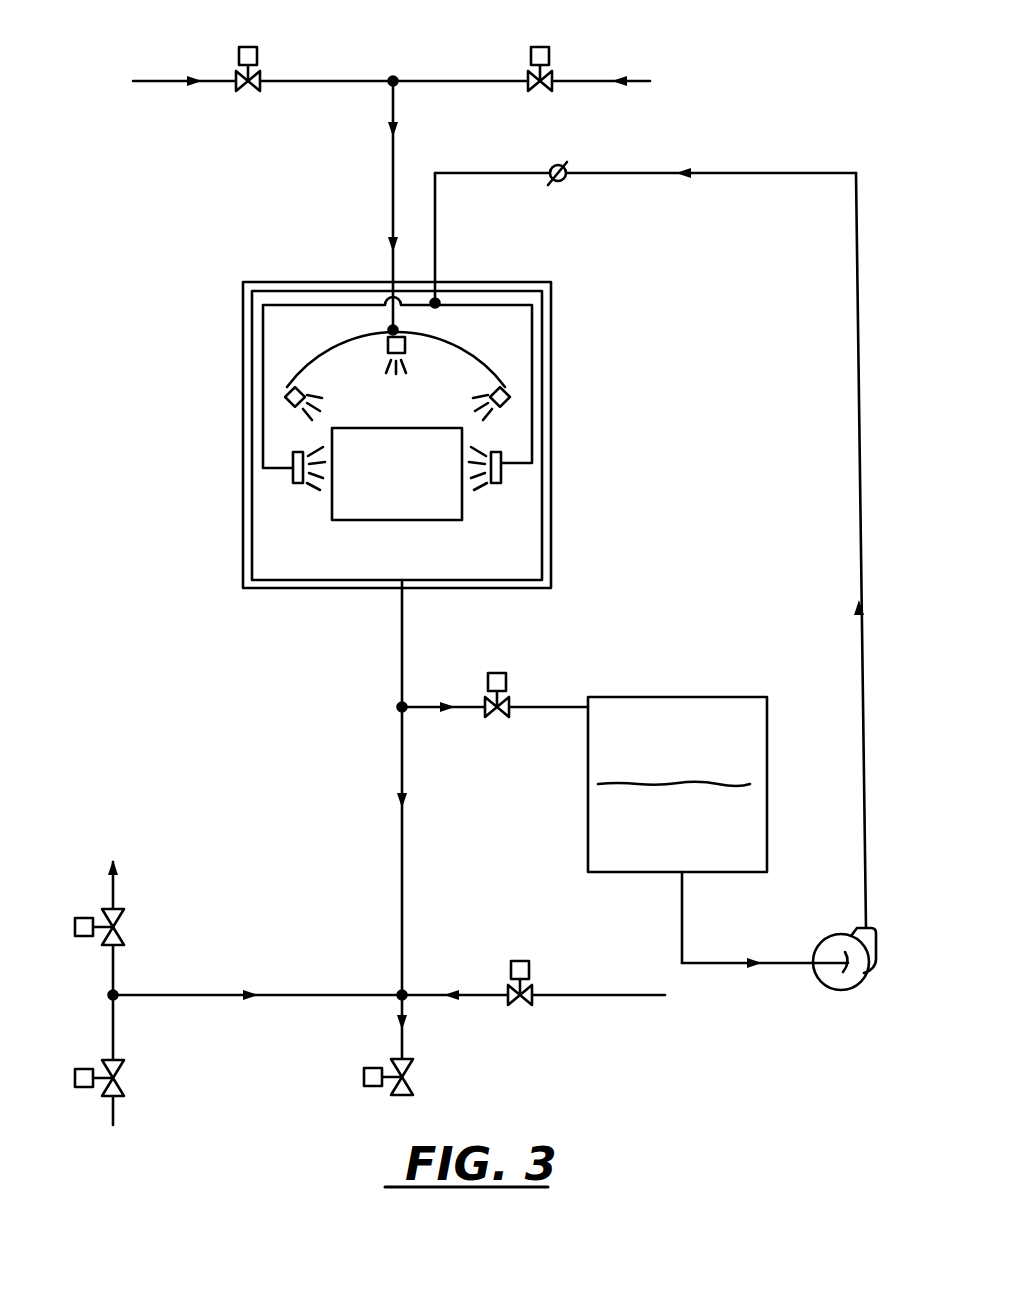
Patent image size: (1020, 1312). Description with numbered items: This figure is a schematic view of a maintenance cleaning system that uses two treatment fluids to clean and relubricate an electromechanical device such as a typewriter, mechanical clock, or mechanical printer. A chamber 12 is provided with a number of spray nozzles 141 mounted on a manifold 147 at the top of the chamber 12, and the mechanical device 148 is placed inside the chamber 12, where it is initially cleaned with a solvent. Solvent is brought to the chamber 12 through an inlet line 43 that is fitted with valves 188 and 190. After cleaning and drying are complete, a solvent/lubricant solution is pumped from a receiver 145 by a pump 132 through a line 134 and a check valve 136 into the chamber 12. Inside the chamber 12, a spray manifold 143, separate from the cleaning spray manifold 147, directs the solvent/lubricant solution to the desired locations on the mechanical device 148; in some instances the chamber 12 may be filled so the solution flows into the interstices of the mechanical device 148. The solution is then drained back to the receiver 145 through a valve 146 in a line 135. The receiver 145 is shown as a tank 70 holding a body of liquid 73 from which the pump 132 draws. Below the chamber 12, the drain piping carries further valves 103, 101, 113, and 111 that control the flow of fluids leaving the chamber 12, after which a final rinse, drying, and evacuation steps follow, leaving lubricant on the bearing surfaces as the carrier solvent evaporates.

The supply conduit 43 is at (160, 48).
The valve 188 is at (266, 68).
The valve 190 is at (559, 64).
The check valve 136 is at (572, 163).
The line 134 is at (859, 478).
The chamber 12 is at (505, 282).
The manifold 147 is at (352, 346).
The spray nozzles 141 is at (306, 393).
The spray manifold 143 is at (300, 488).
The mechanical device 148 is at (404, 522).
The line 135 is at (528, 718).
The valve 146 is at (510, 684).
The tank 70 is at (767, 698).
The liquid 73 is at (726, 656).
The receiver 145 is at (767, 820).
The pump 132 is at (820, 990).
The valve 103 is at (128, 928).
The valve 101 is at (127, 1080).
The valve 113 is at (539, 982).
The valve 111 is at (427, 1082).